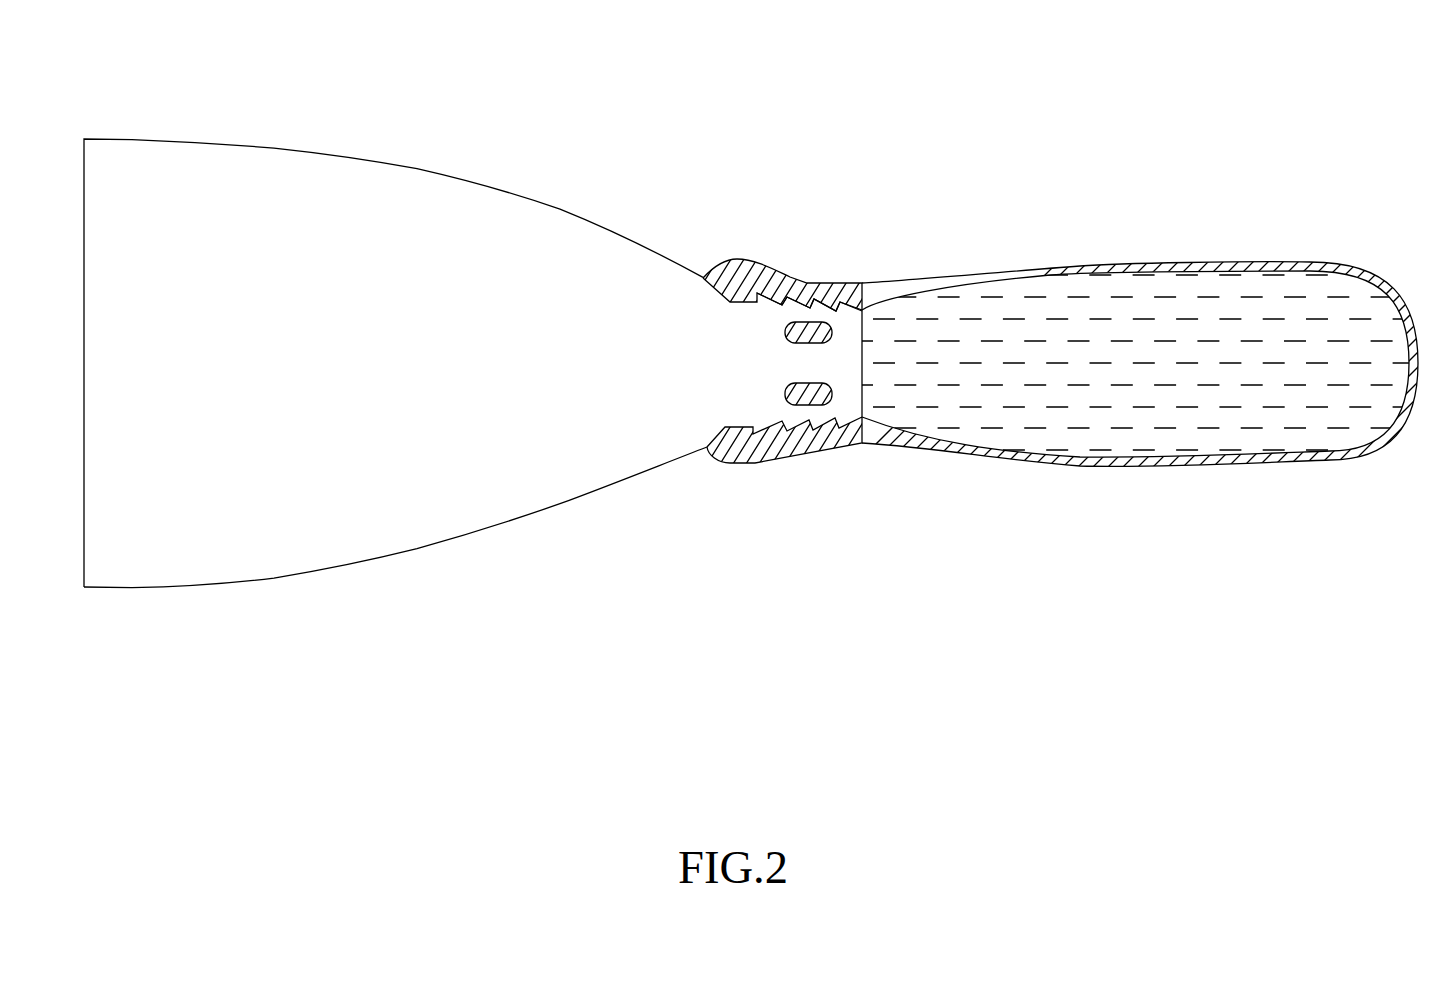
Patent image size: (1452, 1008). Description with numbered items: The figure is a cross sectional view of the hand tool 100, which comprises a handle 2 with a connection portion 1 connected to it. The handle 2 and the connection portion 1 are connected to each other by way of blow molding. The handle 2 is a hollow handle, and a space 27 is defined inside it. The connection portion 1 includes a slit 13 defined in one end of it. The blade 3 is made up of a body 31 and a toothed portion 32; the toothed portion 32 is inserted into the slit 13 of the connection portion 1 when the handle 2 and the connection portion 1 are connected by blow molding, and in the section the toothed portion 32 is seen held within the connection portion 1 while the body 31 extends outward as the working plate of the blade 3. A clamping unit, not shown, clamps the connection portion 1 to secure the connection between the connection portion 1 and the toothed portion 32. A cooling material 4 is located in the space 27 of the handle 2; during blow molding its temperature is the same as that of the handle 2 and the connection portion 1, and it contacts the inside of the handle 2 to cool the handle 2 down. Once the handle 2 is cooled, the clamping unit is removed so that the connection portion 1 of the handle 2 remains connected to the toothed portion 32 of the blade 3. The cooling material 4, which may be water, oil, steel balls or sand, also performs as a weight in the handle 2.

The hand tool 100 is at (745, 130).
The connection portion 1 is at (785, 365).
The slit 13 is at (727, 430).
The handle 2 is at (1146, 373).
The space 27 is at (1357, 437).
The blade 3 is at (395, 365).
The body 31 is at (380, 533).
The toothed portion 32 is at (850, 303).
The cooling material 4 is at (1167, 297).